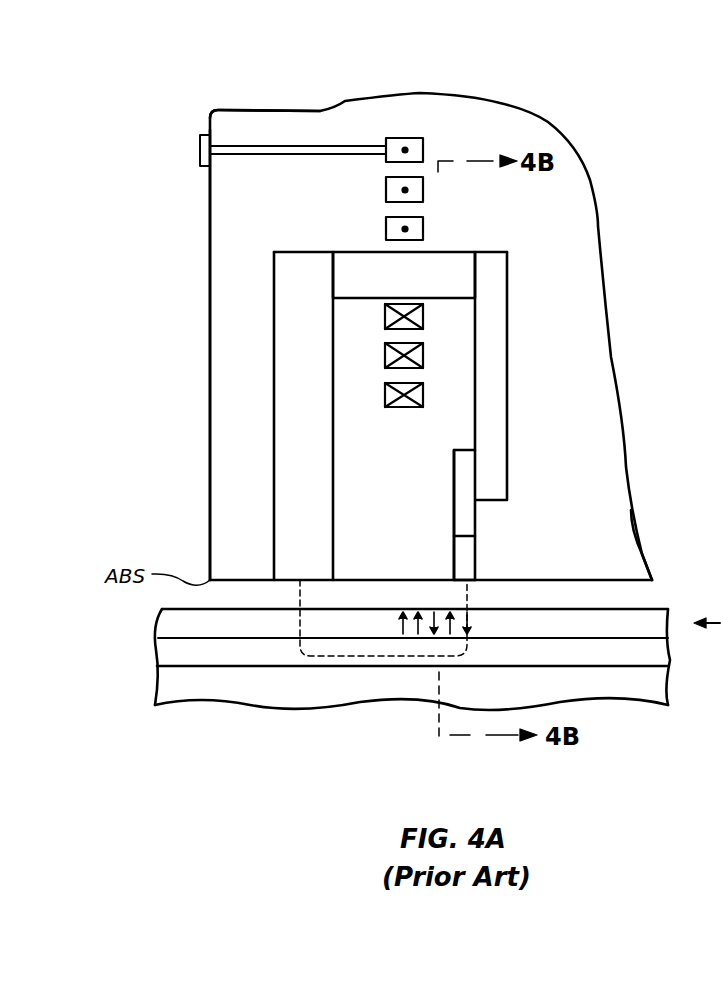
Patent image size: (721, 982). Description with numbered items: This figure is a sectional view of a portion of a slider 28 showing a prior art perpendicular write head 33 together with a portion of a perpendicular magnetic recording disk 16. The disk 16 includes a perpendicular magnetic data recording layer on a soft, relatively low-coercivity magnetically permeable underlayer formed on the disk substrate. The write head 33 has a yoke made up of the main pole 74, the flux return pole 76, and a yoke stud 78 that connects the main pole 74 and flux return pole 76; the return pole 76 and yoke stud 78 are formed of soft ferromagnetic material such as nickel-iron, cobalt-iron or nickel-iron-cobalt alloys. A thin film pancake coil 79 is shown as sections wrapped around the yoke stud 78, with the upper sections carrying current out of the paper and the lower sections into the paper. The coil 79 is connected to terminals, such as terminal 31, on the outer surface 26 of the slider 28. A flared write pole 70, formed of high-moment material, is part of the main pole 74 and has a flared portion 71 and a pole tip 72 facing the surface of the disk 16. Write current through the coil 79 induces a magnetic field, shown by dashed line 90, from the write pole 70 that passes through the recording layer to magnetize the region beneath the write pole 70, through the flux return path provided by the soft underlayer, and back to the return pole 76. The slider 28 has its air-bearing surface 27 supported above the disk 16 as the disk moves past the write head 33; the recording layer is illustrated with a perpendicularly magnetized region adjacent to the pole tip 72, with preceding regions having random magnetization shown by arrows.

The perpendicular write head 33 is at (596, 93).
The slider 28 is at (216, 123).
The terminal 31 is at (200, 155).
The outer surface 26 is at (208, 322).
The pancake coil 79 is at (428, 138).
The yoke stud 78 is at (458, 262).
The flux return pole 76 is at (287, 422).
The main pole 74 is at (498, 422).
The flared write pole 70 is at (455, 470).
The flared portion 71 is at (455, 520).
The pole tip 72 is at (455, 563).
The air-bearing surface 27 is at (632, 582).
The perpendicular magnetic recording disk 16 is at (160, 688).
The magnetic field 90 is at (300, 662).